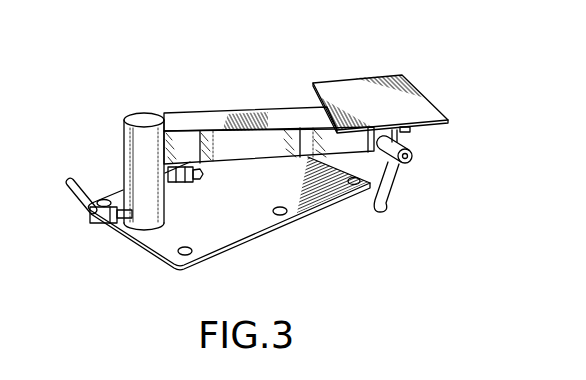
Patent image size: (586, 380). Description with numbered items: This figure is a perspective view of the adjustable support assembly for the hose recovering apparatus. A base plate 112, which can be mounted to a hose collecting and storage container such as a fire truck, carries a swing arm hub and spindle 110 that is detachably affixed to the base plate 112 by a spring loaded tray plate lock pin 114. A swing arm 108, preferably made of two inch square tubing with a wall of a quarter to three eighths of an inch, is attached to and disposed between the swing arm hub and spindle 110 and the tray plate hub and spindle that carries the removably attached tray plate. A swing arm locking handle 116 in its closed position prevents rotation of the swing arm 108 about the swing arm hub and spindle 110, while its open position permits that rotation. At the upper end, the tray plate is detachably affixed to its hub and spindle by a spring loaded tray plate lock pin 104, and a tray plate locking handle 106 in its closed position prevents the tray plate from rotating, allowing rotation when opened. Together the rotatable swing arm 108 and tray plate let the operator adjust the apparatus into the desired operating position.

The spring loaded tray plate lock pin 104 is at (411, 132).
The tray plate locking handle 106 is at (389, 193).
The swing arm 108 is at (267, 118).
The swing arm hub and spindle 110 is at (140, 117).
The base plate 112 is at (220, 240).
The spring loaded tray plate lock pin 114 is at (193, 183).
The swing arm locking handle 116 is at (73, 180).